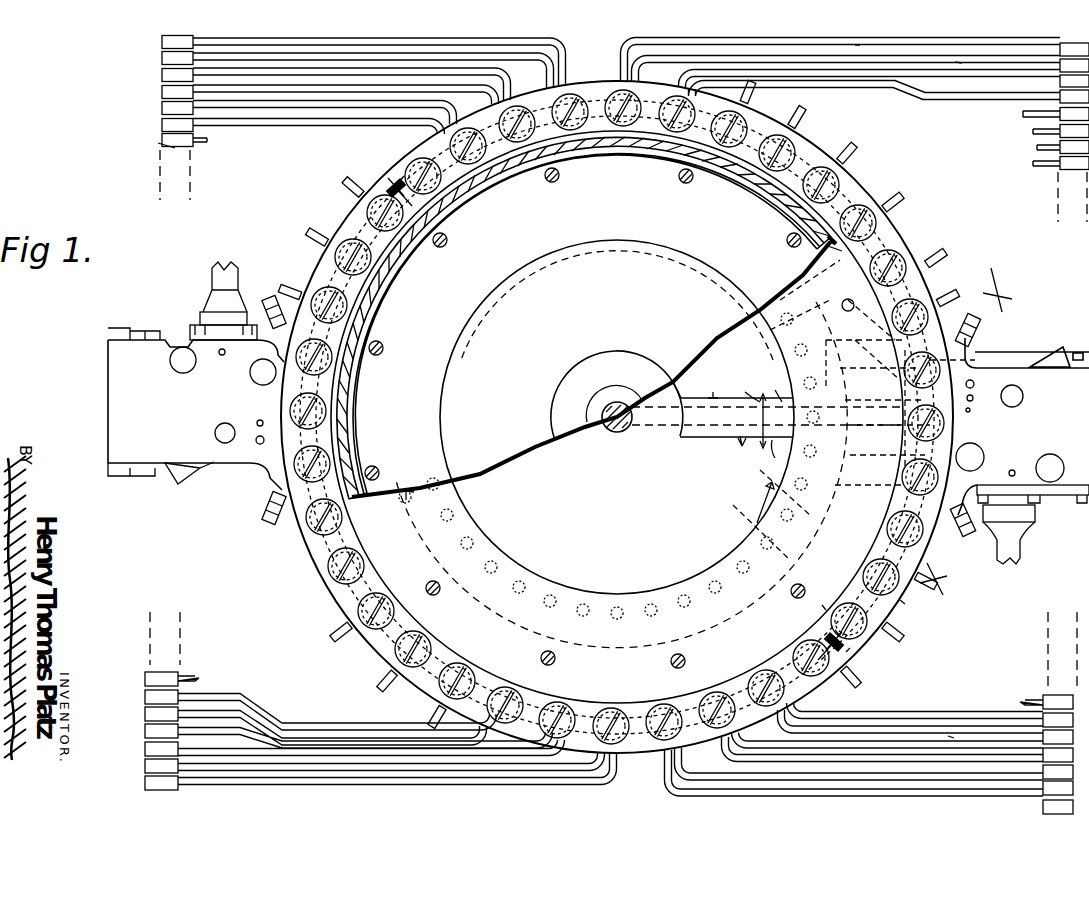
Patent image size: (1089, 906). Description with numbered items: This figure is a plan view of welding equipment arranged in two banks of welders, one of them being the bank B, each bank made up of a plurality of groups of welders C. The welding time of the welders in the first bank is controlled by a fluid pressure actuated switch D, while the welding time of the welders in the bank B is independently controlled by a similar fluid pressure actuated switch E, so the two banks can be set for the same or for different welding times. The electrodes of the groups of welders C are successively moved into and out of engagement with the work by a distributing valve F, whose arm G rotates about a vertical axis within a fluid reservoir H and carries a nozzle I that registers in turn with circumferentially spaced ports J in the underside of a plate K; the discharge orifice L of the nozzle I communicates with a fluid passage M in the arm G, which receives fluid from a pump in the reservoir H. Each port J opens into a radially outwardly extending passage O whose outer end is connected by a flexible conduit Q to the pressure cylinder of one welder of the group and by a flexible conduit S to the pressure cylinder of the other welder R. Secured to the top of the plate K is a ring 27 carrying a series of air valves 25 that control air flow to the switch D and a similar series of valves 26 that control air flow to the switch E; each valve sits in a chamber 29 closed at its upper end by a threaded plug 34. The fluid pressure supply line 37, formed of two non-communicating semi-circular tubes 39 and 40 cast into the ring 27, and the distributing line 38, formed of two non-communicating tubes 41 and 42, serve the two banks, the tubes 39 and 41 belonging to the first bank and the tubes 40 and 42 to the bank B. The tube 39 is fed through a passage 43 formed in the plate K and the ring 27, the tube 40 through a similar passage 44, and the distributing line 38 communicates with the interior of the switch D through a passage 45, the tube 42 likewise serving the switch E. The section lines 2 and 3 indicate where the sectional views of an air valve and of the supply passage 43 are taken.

The pointer contact position marker 2 is at (879, 358).
The contact position marker 3 is at (849, 539).
The valves 25 is at (900, 600).
The valves 26 is at (318, 263).
The ring 27 is at (922, 270).
The chamber 29 is at (934, 302).
The plug 34 is at (718, 692).
The fluid pressure supply line 37 is at (411, 250).
The distributing line 38 is at (392, 186).
The section of tubing 39 is at (835, 630).
The section of tubing 40 is at (433, 236).
The section of tubing 41 is at (850, 648).
The section of tubing 42 is at (398, 182).
The passage 43 is at (822, 605).
The passage 44 is at (406, 506).
The passage 45 is at (967, 413).
The bank of welders B is at (153, 141).
The group of welders C is at (162, 74).
The fluid pressure actuated switch D is at (1005, 378).
The fluid pressure actuated switch E is at (186, 343).
The distributing valve F is at (742, 446).
The arm G is at (714, 440).
The fluid reservoir H is at (717, 352).
The nozzle I is at (774, 385).
The ports J is at (769, 457).
The plate K is at (712, 560).
The discharge orifice L is at (748, 387).
The fluid passage M is at (707, 385).
The passage O is at (854, 410).
The flexible conduit Q is at (856, 45).
The welder R is at (1056, 52).
The flexible conduit S is at (956, 62).